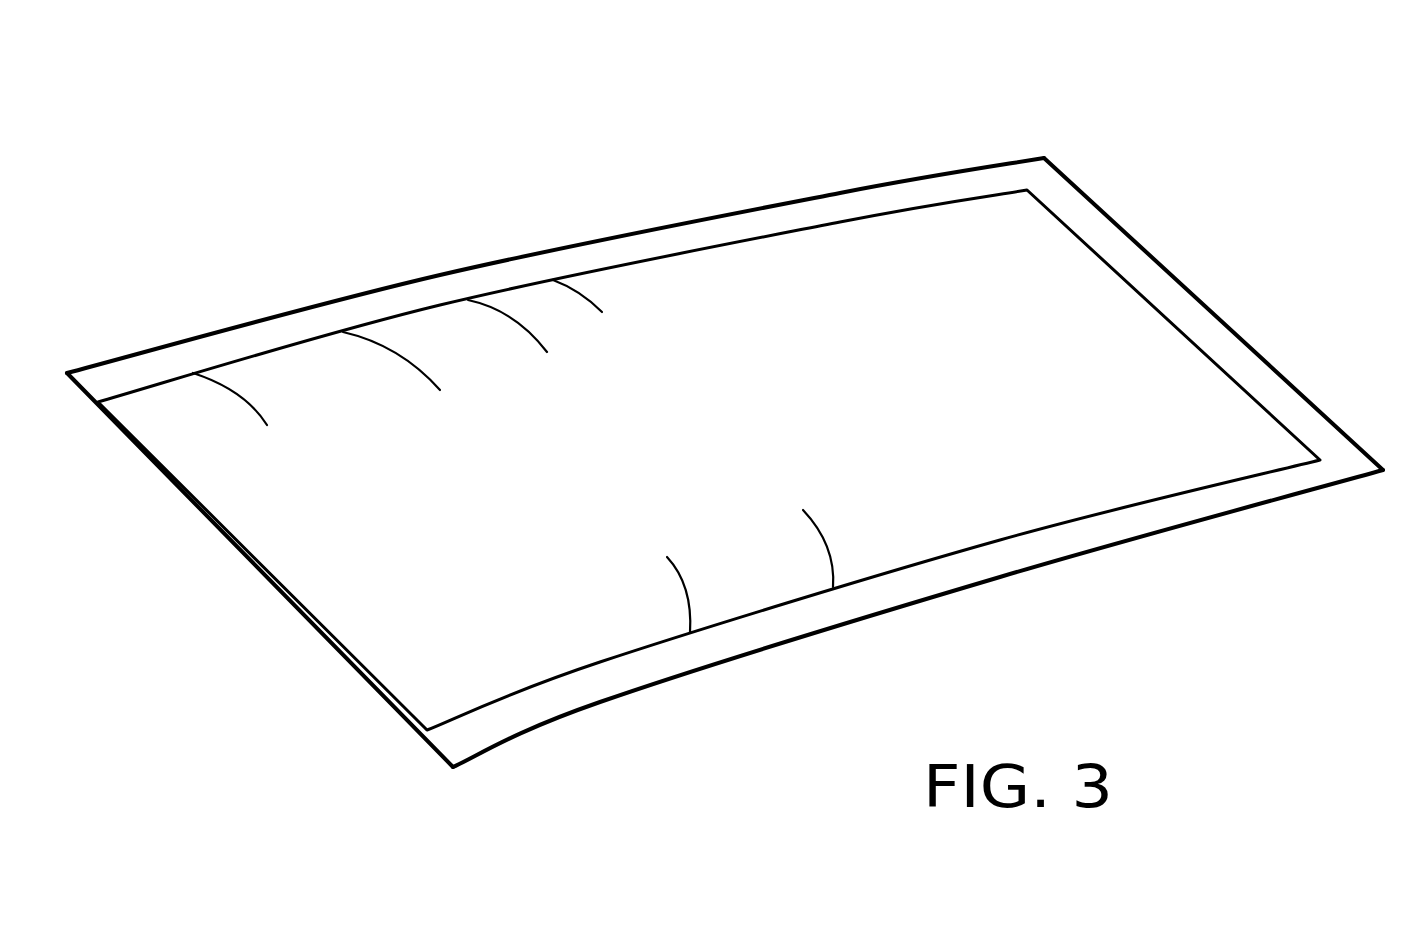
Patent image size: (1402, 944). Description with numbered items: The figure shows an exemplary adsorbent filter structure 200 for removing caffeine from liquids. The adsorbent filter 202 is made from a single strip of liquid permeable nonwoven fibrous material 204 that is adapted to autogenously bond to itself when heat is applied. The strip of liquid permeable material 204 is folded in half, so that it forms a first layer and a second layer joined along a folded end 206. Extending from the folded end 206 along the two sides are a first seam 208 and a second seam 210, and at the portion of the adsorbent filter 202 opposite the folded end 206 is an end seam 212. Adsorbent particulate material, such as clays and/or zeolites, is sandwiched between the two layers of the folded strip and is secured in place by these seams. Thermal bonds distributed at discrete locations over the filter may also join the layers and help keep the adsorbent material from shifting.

The adsorbent filter structure 200 is at (725, 402).
The adsorbent filter 202 is at (665, 455).
The liquid permeable nonwoven fibrous material 204 is at (1163, 407).
The folded end 206 is at (280, 597).
The first seam 208 is at (893, 595).
The second seam 210 is at (403, 297).
The end seam 212 is at (1135, 263).